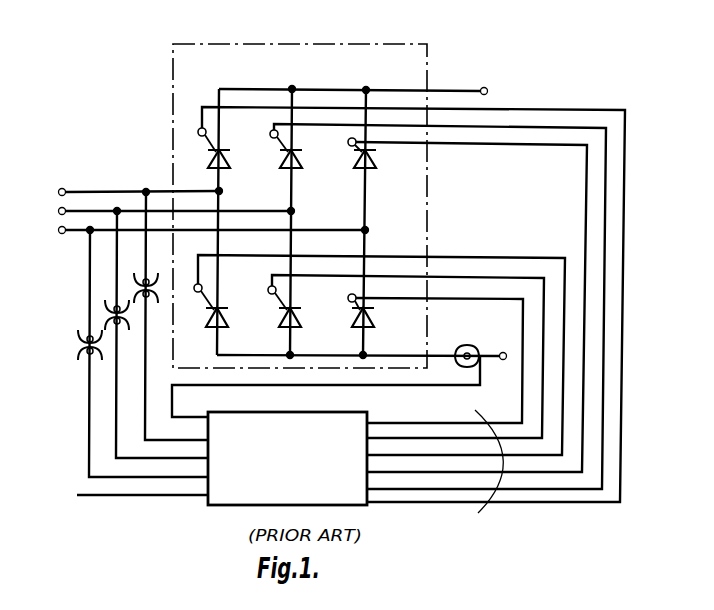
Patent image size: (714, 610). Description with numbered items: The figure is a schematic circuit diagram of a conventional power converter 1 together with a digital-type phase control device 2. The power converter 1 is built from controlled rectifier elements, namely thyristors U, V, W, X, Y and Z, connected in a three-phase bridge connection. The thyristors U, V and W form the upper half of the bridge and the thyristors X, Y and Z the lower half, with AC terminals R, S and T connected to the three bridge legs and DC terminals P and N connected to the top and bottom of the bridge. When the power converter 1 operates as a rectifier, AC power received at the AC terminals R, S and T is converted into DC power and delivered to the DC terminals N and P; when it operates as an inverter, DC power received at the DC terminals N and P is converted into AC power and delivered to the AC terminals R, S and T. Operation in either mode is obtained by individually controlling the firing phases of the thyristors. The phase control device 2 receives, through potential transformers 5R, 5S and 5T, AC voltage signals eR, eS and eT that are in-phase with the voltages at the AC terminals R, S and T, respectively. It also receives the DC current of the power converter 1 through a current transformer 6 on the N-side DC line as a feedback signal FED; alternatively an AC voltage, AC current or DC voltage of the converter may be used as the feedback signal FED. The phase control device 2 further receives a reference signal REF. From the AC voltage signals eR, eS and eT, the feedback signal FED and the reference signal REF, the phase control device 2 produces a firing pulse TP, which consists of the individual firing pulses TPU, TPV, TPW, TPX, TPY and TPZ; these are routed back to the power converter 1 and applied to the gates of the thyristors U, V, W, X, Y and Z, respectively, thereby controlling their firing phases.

The power converter 1 is at (173, 56).
The phase control device 2 is at (212, 505).
The potential transformer 5R is at (137, 288).
The potential transformer 5S is at (110, 317).
The potential transformer 5T is at (80, 345).
The current transformer 6 is at (467, 343).
The thyristor U is at (227, 160).
The thyristor V is at (299, 160).
The thyristor W is at (373, 160).
The thyristor X is at (225, 318).
The thyristor Y is at (298, 318).
The thyristor Z is at (371, 318).
The AC terminal R is at (133, 193).
The AC terminal S is at (169, 212).
The AC terminal T is at (206, 231).
The DC terminal P is at (353, 80).
The DC terminal N is at (363, 345).
The firing pulse TPU is at (470, 110).
The firing pulse TPV is at (508, 128).
The firing pulse TPW is at (552, 145).
The firing pulse TPX is at (447, 258).
The firing pulse TPY is at (488, 278).
The firing pulse TPZ is at (513, 298).
The firing pulse TP is at (489, 475).
The feedback signal FED is at (450, 388).
The AC voltage signal eR is at (143, 417).
The AC voltage signal eS is at (114, 443).
The AC voltage signal eT is at (87, 467).
The reference signal REF is at (122, 496).